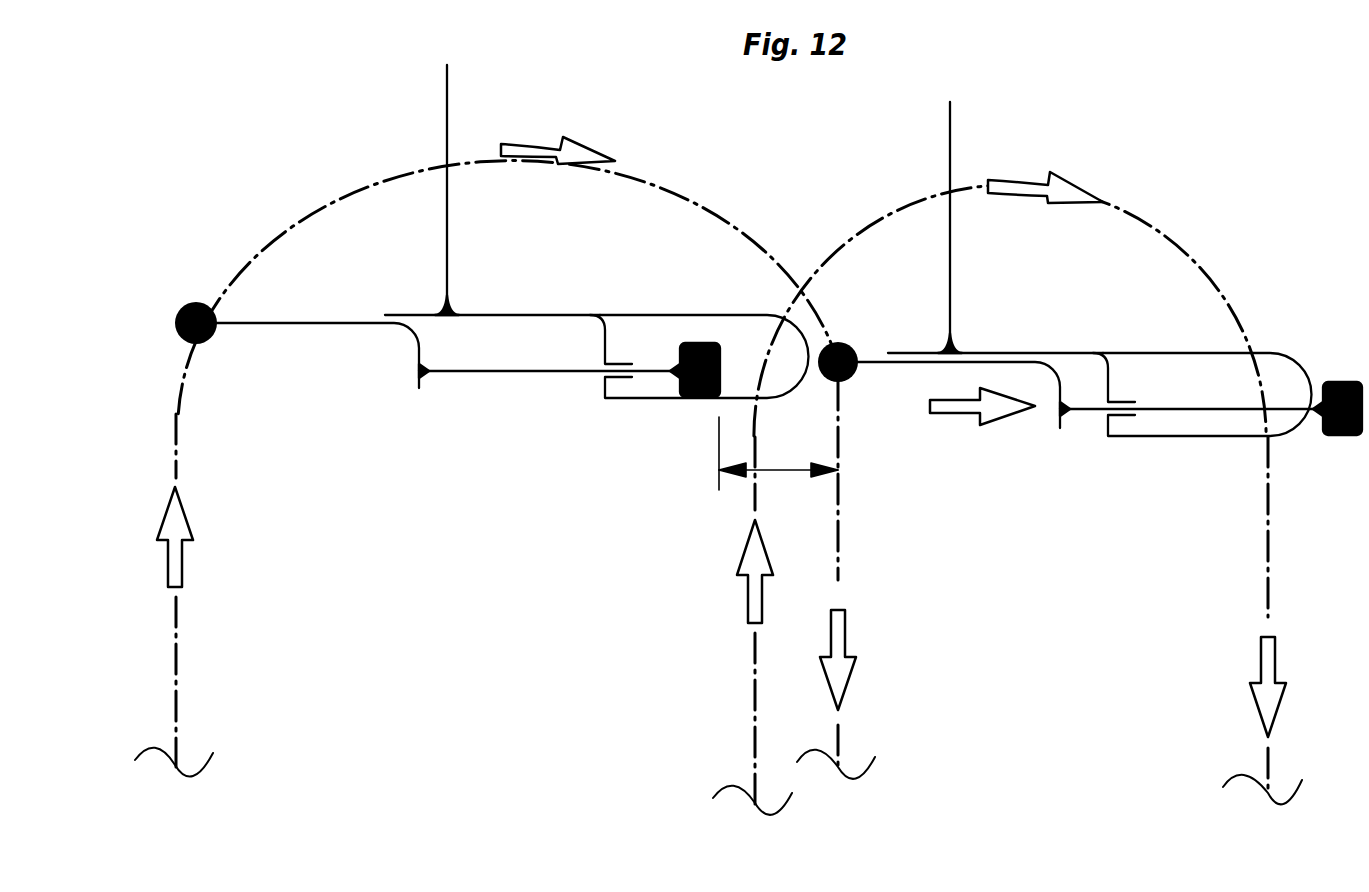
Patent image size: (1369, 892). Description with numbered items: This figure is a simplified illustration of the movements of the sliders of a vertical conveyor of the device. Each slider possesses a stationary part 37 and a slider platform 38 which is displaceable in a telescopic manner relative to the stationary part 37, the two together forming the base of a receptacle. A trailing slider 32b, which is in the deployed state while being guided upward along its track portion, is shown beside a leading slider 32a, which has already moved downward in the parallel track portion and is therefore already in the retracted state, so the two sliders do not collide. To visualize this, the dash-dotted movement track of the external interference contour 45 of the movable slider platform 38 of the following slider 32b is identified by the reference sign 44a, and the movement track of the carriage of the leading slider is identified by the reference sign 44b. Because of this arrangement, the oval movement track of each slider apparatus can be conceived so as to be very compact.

The leading slider 32a is at (1180, 353).
The trailing slider 32b is at (685, 313).
The stationary part 37 is at (502, 313).
The slider platform 38 is at (295, 327).
The movement track of the external interference contour 44a is at (313, 200).
The movement track of the carriage 44b is at (1185, 252).
The external interference contour 45 is at (175, 318).